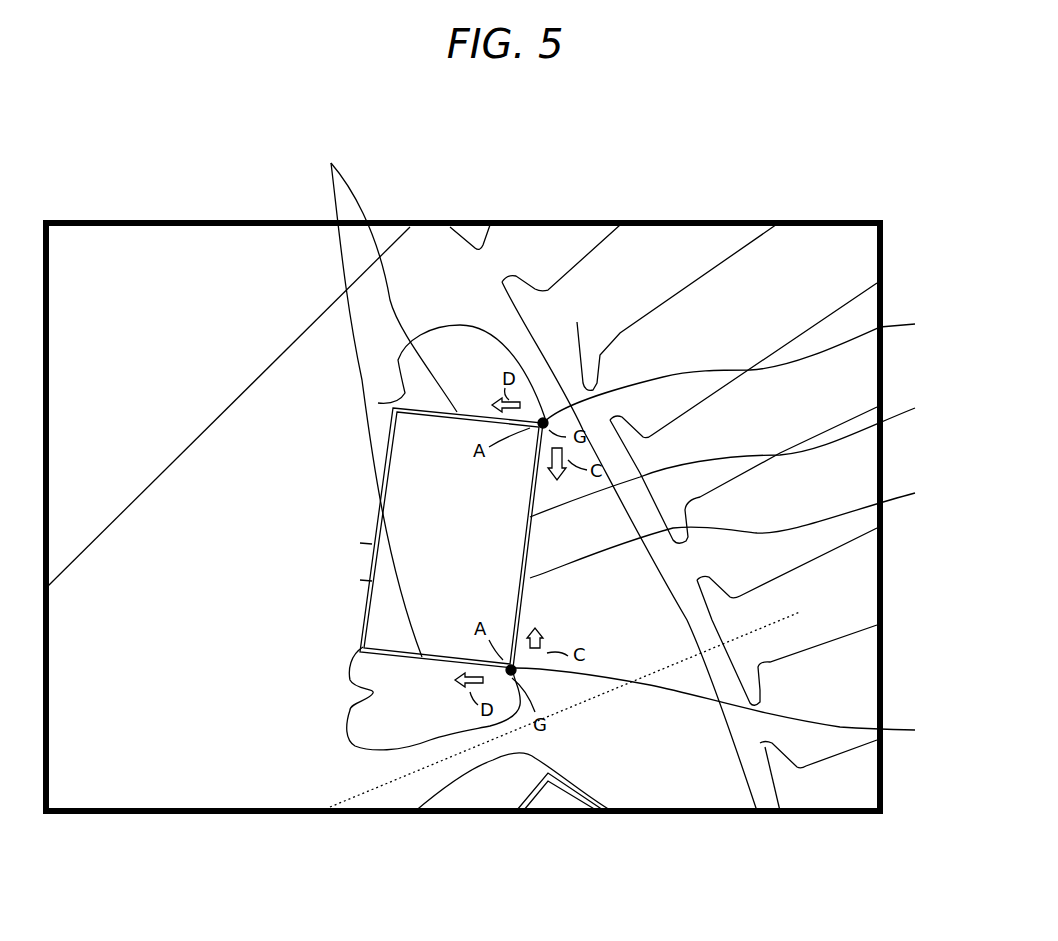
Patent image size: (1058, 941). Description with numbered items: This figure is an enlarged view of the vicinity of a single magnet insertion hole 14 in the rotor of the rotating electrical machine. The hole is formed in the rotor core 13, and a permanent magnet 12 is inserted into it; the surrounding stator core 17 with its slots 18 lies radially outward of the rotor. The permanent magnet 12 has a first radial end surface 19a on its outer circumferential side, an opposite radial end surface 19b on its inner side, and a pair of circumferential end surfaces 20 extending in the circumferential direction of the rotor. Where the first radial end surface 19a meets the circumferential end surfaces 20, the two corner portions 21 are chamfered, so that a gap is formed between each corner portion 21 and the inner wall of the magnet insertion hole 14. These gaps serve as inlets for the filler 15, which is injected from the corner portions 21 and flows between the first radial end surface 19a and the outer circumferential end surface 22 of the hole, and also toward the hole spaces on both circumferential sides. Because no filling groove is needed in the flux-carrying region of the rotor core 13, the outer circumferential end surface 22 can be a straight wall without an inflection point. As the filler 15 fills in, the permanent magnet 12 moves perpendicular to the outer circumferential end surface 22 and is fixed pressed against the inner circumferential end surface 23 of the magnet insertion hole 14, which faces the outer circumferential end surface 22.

The permanent magnet 12 is at (445, 623).
The rotor core 13 is at (123, 780).
The magnet insertion hole 14 is at (465, 728).
The filler 15 is at (378, 720).
The stator core 17 is at (657, 245).
The slot 18 is at (843, 670).
The first radial end surface 19a is at (747, 455).
The first radial end surface 19b is at (362, 543).
The circumferential end surface 20 is at (386, 396).
The corner portion 21 is at (731, 525).
The outer circumferential end surface 22 is at (739, 528).
The inner circumferential end surface 23 is at (362, 578).